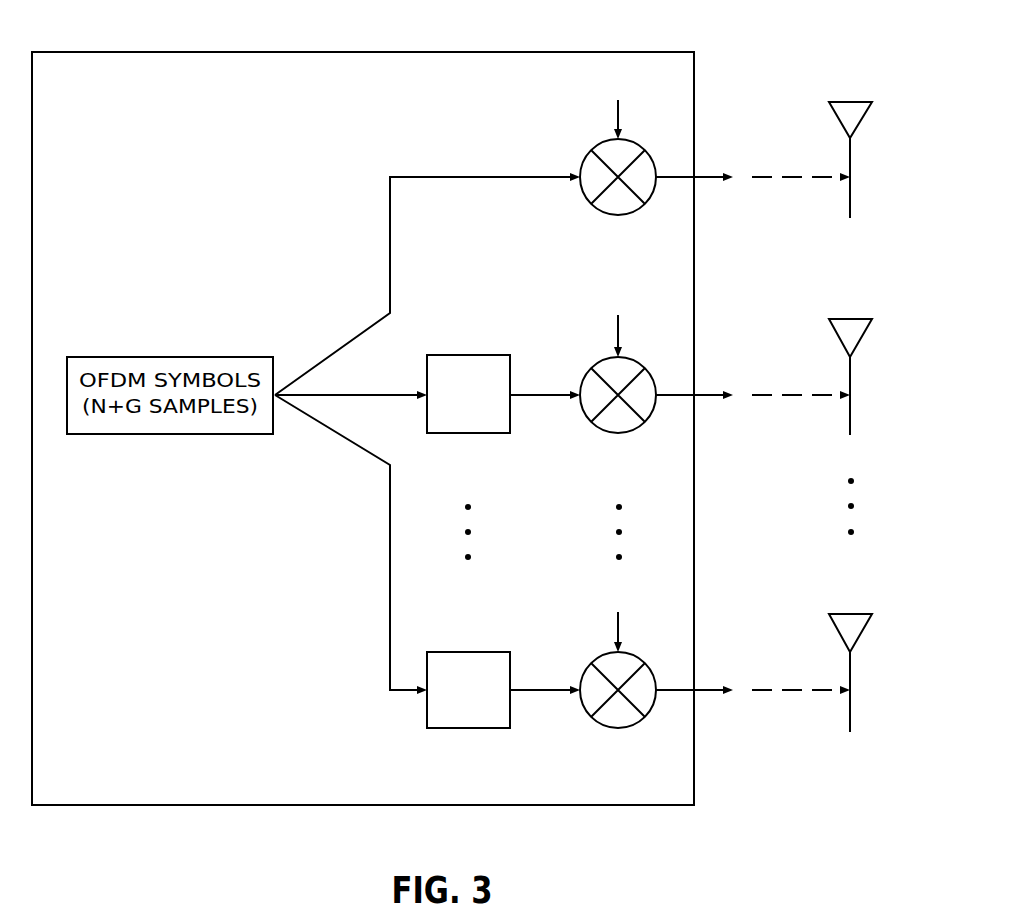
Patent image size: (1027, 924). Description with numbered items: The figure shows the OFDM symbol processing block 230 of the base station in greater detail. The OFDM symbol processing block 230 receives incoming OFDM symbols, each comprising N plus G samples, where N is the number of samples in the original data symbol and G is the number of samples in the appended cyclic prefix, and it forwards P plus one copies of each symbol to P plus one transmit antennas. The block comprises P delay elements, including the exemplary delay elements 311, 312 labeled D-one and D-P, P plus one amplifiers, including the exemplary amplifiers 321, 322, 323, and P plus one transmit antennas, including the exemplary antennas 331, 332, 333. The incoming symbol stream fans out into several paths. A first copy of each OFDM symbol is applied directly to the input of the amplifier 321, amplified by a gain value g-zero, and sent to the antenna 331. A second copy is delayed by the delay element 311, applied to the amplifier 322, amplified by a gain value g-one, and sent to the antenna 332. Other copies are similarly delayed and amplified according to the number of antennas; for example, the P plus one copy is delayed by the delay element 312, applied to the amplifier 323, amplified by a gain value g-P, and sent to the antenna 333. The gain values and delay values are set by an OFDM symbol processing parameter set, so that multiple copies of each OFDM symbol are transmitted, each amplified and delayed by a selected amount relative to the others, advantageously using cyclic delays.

The OFDM symbol processing block 230 is at (362, 52).
The delay element 311 is at (468, 355).
The delay element 312 is at (468, 652).
The amplifier 321 is at (622, 215).
The amplifier 322 is at (622, 433).
The amplifier 323 is at (622, 728).
The transmit antenna 331 is at (848, 102).
The transmit antenna 332 is at (848, 319).
The transmit antenna 333 is at (848, 614).